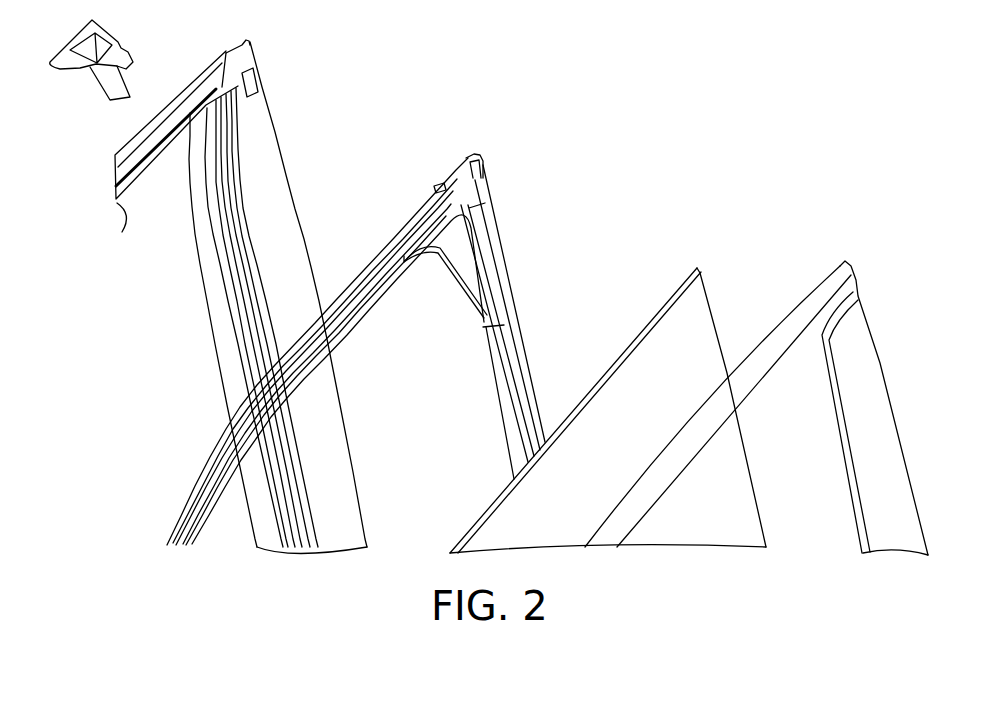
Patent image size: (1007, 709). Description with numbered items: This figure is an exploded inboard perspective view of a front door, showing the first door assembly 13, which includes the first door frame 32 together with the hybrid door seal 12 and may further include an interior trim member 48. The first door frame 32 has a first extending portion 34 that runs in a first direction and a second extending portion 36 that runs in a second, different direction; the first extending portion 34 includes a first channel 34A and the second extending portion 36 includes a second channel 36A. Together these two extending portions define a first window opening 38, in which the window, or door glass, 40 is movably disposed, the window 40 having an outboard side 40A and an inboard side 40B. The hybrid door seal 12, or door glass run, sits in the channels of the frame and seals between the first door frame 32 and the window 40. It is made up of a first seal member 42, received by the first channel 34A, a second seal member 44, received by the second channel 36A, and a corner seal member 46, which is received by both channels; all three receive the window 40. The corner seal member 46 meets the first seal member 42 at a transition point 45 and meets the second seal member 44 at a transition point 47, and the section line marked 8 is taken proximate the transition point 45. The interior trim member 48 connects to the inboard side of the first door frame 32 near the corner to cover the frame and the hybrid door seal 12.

The section line 8- 8 is at (413, 160).
The hybrid door seal 12 is at (505, 228).
The first door assembly 13 is at (642, 118).
The first door frame 32 is at (272, 107).
The first extending portion 34 is at (128, 140).
The first channel 34A is at (120, 232).
The second extending portion 36 is at (208, 300).
The second channel 36A is at (237, 340).
The first window opening 38 is at (147, 175).
The window 40 is at (689, 378).
The outboard side 40A is at (690, 342).
The inboard side 40B is at (642, 317).
The first seal member 42 is at (190, 487).
The second seal member 44 is at (533, 337).
The transition point 45 is at (410, 222).
The corner seal member 46 is at (427, 270).
The transition point 47 is at (512, 277).
The interior trim member 48 is at (98, 24).